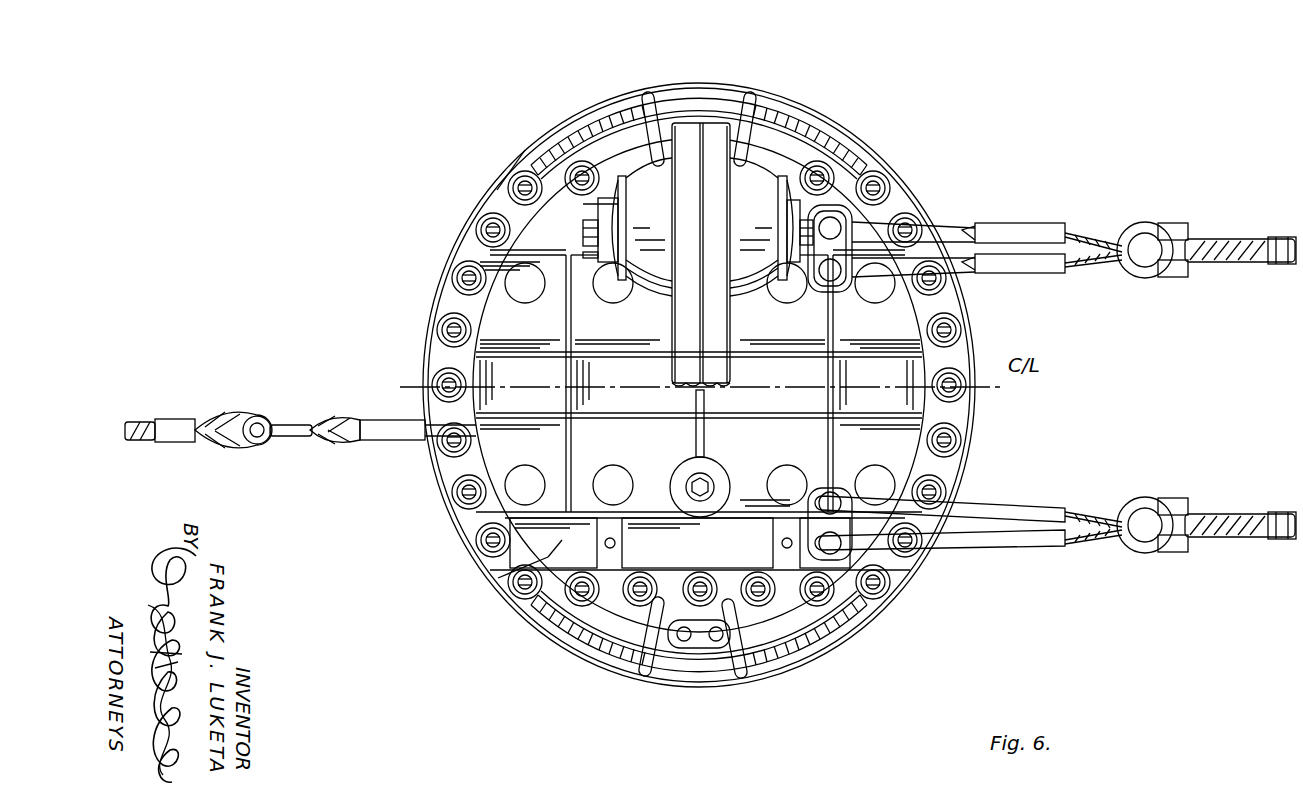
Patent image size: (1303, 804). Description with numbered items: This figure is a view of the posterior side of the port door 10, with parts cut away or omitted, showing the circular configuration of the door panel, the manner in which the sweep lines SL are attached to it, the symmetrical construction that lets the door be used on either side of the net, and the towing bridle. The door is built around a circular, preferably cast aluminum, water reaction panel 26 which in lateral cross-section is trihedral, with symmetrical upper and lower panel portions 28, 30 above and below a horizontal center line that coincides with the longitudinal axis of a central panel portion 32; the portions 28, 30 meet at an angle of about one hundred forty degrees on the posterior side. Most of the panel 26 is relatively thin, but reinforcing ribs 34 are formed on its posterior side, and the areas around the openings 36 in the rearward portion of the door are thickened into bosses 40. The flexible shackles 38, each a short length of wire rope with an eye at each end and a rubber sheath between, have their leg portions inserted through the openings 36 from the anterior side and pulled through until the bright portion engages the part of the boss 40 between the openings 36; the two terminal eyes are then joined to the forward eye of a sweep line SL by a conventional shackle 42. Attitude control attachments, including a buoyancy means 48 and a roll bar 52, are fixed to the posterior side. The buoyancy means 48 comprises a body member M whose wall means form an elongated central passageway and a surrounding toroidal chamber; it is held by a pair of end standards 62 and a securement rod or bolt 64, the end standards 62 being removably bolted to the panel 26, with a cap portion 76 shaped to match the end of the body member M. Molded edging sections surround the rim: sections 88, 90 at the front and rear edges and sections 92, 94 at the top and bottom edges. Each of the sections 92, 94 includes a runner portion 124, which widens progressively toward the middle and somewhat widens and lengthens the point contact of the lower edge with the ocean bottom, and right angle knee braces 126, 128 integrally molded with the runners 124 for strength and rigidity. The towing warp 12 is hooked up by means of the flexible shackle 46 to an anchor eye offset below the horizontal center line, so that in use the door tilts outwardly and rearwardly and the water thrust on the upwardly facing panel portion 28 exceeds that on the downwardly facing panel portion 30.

The apparatus 10 is at (566, 86).
The towing warp 12 is at (145, 420).
The water reaction panel 26 is at (506, 431).
The upper panel portion 28 is at (910, 320).
The lower panel portion 30 is at (535, 570).
The central panel portion 32 is at (905, 405).
The reinforcing ribs 34 is at (560, 275).
The openings 36 is at (832, 222).
The flexible shackles 38 is at (1017, 228).
The bosses 40 is at (855, 245).
The conventional shackle 42 is at (1145, 222).
The flexible shackle 46 is at (400, 420).
The buoyancy means 48 is at (643, 162).
The roll bar 52 is at (670, 320).
The end standards 62 is at (586, 254).
The securement rod or bolt 64 is at (575, 195).
The cap portion 76 is at (600, 190).
The edging section 88 is at (963, 338).
The edging section 90 is at (446, 272).
The edging section 92 is at (595, 665).
The edging section 94 is at (707, 84).
The runner portion 124 is at (704, 655).
The knee brace 126 is at (751, 95).
The knee brace 128 is at (650, 95).
The body member M is at (790, 142).
The sweep lines SL is at (1241, 238).